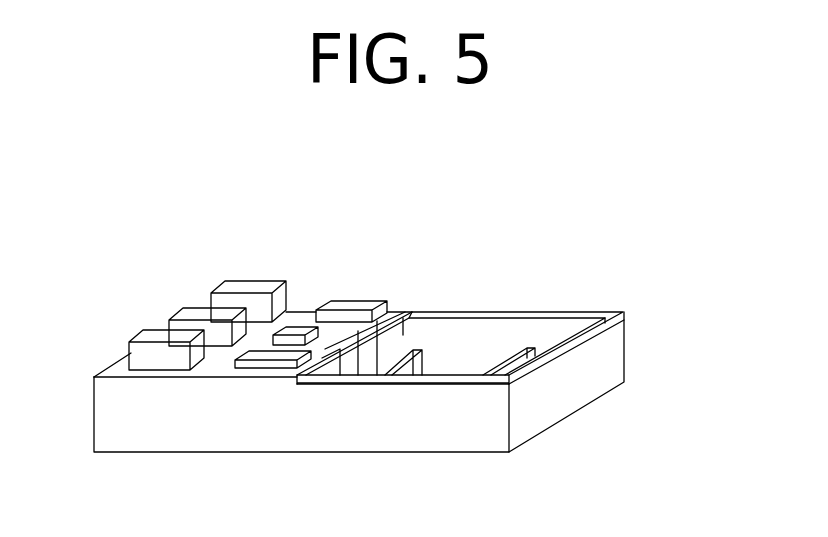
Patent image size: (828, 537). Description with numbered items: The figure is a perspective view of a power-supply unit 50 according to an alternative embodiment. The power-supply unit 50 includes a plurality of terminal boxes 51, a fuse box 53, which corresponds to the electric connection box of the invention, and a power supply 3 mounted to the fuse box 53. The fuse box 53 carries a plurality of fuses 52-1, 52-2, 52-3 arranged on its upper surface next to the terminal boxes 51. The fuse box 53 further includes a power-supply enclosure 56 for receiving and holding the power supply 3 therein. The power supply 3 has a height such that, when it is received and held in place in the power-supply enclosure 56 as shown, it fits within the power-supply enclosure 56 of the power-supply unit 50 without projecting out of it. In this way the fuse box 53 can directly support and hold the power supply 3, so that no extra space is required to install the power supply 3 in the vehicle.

The power-supply unit 50 is at (411, 241).
The terminal box 51 is at (218, 301).
The fuse 52-1 is at (261, 369).
The fuse 52-2 is at (293, 322).
The fuse 52-3 is at (349, 309).
The power supply 3 is at (465, 325).
The fuse box 53 is at (102, 419).
The power-supply enclosure 56 is at (617, 348).